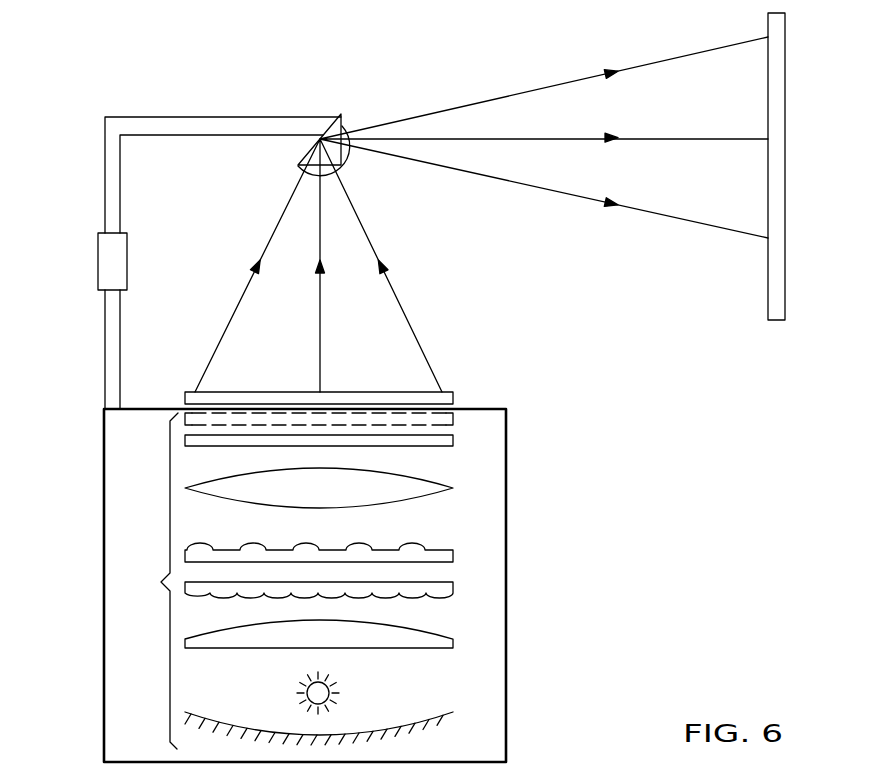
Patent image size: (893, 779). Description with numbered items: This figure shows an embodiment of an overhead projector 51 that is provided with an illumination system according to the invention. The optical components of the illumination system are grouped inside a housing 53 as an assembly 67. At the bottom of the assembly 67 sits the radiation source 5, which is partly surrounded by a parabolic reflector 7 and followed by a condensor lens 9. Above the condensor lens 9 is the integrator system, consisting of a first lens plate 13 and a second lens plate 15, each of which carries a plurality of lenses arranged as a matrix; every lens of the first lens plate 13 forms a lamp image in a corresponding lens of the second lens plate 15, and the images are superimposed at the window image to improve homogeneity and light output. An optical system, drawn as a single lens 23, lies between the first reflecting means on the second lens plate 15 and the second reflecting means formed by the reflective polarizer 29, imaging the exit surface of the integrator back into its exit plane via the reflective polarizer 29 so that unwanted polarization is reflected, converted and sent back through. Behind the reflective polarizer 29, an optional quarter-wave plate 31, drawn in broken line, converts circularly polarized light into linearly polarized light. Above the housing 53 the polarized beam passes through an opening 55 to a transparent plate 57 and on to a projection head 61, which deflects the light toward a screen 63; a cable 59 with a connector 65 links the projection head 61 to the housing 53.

The radiation source 5 is at (337, 688).
The parabolic reflector 7 is at (452, 711).
The condensor lens 9 is at (435, 643).
The first lens plate 13 is at (443, 593).
The second lens plate 15 is at (443, 555).
The optical system 23 is at (427, 490).
The reflective polarizer 29 is at (438, 442).
The λ/4 plate 31 is at (483, 416).
The overhead projector 51 is at (558, 546).
The housing 53 is at (115, 533).
The opening 55 is at (144, 408).
The projection plate 57 is at (448, 396).
The cable 59 is at (108, 302).
The prism 61 is at (338, 124).
The screen 63 is at (780, 277).
The connector 65 is at (105, 248).
The optical assembly 67 is at (161, 582).